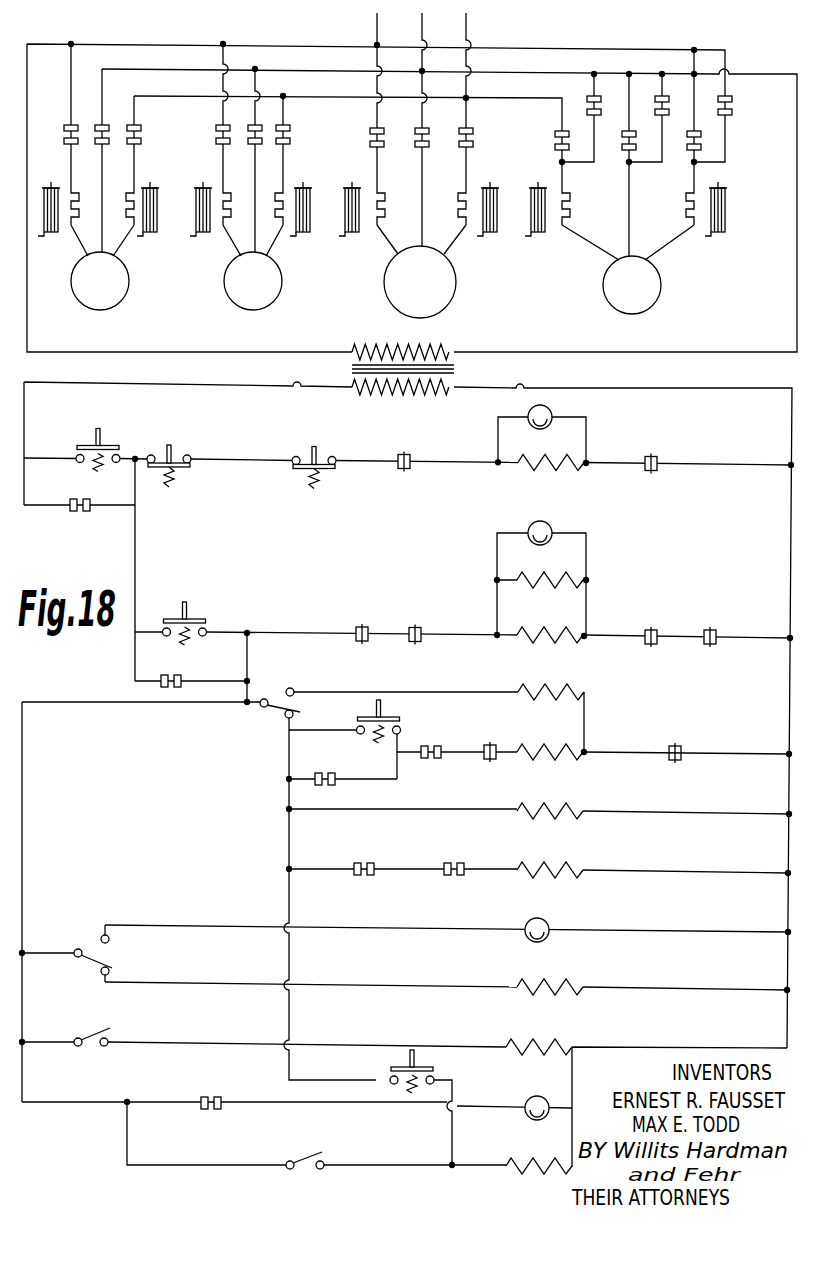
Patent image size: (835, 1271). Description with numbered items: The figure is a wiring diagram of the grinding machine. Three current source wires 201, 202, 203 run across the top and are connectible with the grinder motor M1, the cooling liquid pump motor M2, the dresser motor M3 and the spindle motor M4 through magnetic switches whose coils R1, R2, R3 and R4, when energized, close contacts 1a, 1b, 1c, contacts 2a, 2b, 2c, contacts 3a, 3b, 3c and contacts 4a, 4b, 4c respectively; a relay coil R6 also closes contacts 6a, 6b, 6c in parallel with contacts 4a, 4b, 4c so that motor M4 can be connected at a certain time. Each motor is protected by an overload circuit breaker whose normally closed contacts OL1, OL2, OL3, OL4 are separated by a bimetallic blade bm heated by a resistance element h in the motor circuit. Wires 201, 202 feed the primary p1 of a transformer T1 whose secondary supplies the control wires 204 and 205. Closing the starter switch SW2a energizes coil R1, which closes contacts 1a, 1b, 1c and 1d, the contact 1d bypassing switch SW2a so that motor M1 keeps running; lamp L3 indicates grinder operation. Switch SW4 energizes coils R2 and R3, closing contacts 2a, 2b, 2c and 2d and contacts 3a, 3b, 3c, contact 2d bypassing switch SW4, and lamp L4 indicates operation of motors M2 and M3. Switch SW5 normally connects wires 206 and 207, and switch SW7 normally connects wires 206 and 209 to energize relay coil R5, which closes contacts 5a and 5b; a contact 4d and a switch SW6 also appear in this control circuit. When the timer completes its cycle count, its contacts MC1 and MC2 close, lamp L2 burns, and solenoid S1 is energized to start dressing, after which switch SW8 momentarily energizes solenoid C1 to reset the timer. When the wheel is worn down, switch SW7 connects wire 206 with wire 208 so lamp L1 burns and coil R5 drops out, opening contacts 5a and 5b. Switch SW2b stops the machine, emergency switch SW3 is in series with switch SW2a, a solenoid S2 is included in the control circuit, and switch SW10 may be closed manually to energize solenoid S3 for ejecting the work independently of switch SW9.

The current source wire 201 is at (377, 26).
The current source wire 202 is at (422, 26).
The current source wire 203 is at (348, 100).
The wire 204 is at (188, 431).
The wire 205 is at (622, 1062).
The wire 206 is at (240, 706).
The wire 207 is at (288, 762).
The wire 208 is at (216, 925).
The wire 209 is at (210, 978).
The contact 1a is at (370, 131).
The contact 1b is at (412, 129).
The contact 1c is at (457, 99).
The contact 1d is at (86, 513).
The contact 2a is at (64, 127).
The contact 2b is at (92, 160).
The contact 2c is at (123, 140).
The contact 2d is at (182, 677).
The contact 3a is at (216, 127).
The contact 3b is at (246, 160).
The contact 3c is at (274, 140).
The contact 4a is at (556, 136).
The contact 4b is at (618, 164).
The contact 4c is at (684, 117).
The contact 4d is at (326, 774).
The contact 5a is at (435, 760).
The contact 5b is at (455, 862).
The contact 6a is at (590, 98).
The contact 6b is at (658, 98).
The contact 6c is at (728, 100).
The resistance element h is at (382, 212).
The bimetallic blade bm is at (315, 210).
The overload circuit breaker contacts OL1 is at (501, 322).
The overload circuit breaker contacts OL2 is at (233, 408).
The overload circuit breaker contacts OL3 is at (457, 441).
The overload circuit breaker contacts OL4 is at (602, 466).
The grinder motor M1 is at (456, 288).
The cooling liquid pump motor M2 is at (121, 302).
The dresser motor M3 is at (266, 281).
The spindle motor M4 is at (645, 285).
The transformer T1 is at (380, 377).
The primary p1 is at (362, 346).
The starter switch SW2a is at (85, 448).
The switch SW2b is at (213, 452).
The emergency switch SW3 is at (405, 453).
The switch SW4 is at (326, 609).
The switch SW5 is at (285, 691).
The switch SW6 is at (404, 710).
The switch SW7 is at (78, 948).
The switch SW8 is at (98, 1036).
The switch SW9 is at (396, 1173).
The switch SW10 is at (436, 1076).
The lamp L1 is at (534, 918).
The lamp L2 is at (537, 1096).
The lamp L3 is at (556, 403).
The lamp L4 is at (556, 519).
The coil R1 is at (556, 458).
The coil R2 is at (644, 624).
The coil R3 is at (556, 576).
The coil R4 is at (542, 746).
The relay coil R5 is at (558, 984).
The relay coil R6 is at (570, 690).
The solenoid S1 is at (560, 882).
The solenoid S2 is at (539, 799).
The solenoid S3 is at (534, 1160).
The solenoid C1 is at (556, 1042).
The timer contact MC1 is at (212, 1096).
The timer contact MC2 is at (370, 855).